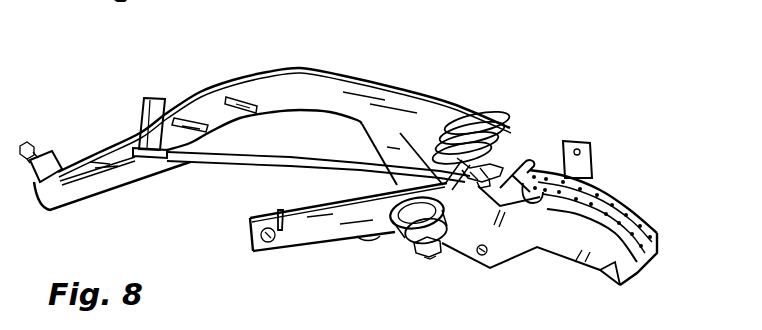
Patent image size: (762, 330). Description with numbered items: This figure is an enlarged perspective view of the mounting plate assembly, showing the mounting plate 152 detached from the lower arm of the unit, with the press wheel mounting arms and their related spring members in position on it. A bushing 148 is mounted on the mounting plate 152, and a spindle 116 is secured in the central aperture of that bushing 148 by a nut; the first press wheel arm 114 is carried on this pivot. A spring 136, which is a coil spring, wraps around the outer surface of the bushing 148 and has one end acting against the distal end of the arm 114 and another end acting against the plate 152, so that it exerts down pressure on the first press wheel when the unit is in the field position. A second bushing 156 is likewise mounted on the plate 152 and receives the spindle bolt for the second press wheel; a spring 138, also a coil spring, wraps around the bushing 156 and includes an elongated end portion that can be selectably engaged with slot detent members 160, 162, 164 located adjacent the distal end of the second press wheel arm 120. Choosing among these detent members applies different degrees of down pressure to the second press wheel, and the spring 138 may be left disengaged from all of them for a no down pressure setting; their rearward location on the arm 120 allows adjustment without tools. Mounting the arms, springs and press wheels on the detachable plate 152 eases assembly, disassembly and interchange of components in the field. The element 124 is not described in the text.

The press wheel arm 114 is at (287, 250).
The spindle 116 is at (431, 258).
The arm 120 is at (340, 76).
The toothed sector plate 124 is at (660, 248).
The spring 136 is at (279, 210).
The spring 138 is at (277, 157).
The bushing 148 is at (398, 243).
The mounting plate member 152 is at (516, 262).
The bushing 156 is at (507, 127).
The slot detent member 160 is at (127, 146).
The slot detent member 162 is at (192, 117).
The slot detent member 164 is at (248, 97).